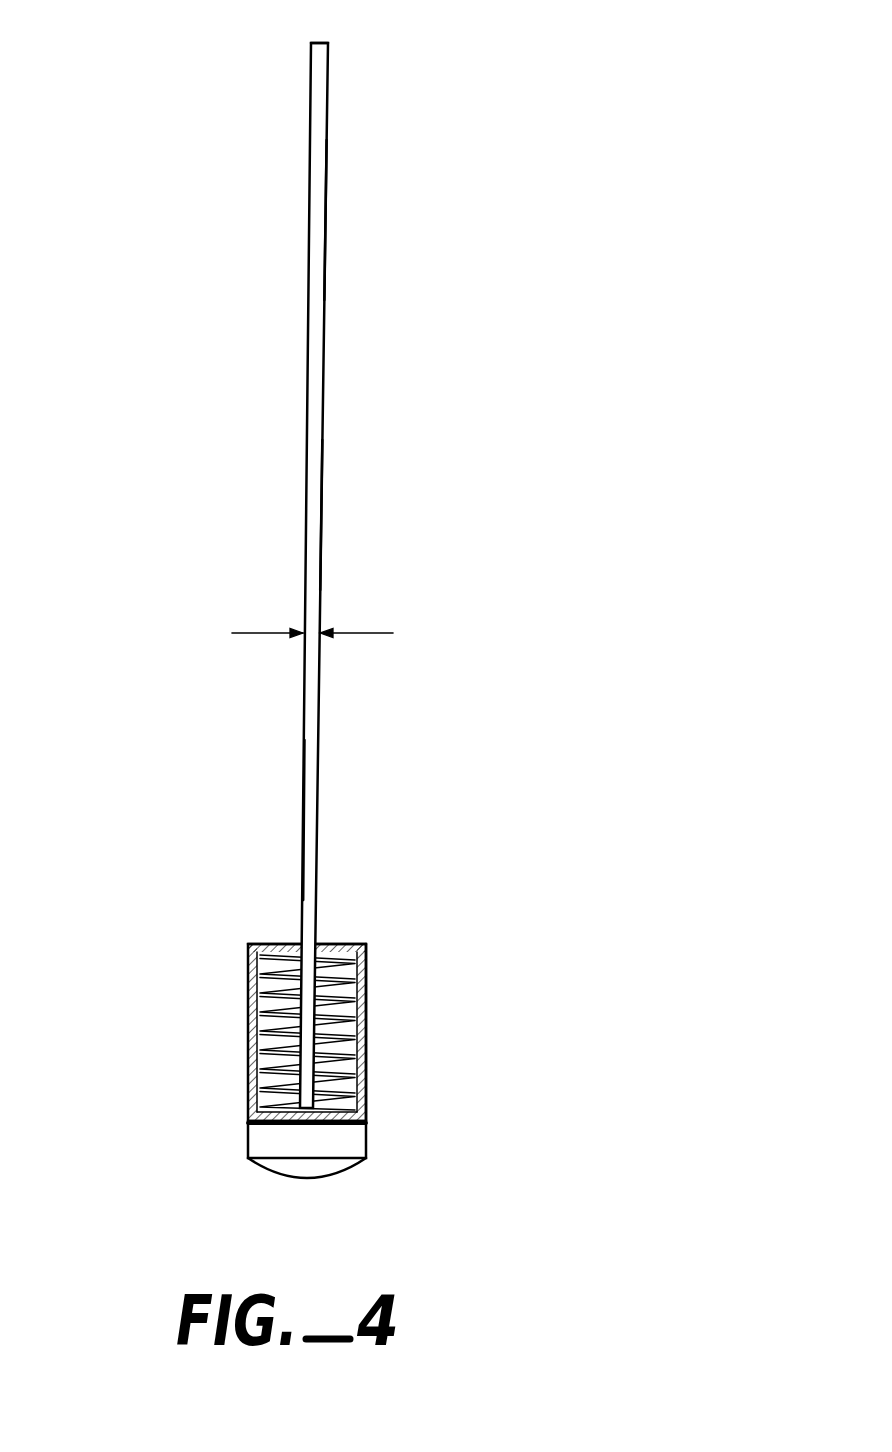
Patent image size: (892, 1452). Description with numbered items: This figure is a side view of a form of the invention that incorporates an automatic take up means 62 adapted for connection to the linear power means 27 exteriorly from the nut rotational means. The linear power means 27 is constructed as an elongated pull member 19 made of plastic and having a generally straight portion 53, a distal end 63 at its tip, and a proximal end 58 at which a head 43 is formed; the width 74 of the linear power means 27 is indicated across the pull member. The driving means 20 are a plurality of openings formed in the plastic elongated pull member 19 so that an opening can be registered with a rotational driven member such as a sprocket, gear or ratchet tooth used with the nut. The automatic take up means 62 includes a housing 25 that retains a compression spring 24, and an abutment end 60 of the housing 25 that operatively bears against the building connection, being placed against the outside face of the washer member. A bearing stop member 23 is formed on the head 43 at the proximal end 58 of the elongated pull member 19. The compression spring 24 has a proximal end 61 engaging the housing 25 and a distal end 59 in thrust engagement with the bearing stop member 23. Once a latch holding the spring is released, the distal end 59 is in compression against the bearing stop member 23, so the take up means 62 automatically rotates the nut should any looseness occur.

The elongated pull member 19 is at (325, 266).
The driving means 20 is at (325, 395).
The bearing stop member 23 is at (248, 1127).
The compression spring 24 is at (372, 1010).
The housing 25 is at (376, 1070).
The linear power means 27 is at (365, 540).
The head 43 is at (368, 1142).
The generally straight portion 53 is at (302, 808).
The proximal end 58 is at (335, 1102).
The distal end of compression spring 59 is at (257, 1110).
The abutment end 60 is at (340, 943).
The proximal end of compression spring 61 is at (258, 966).
The automatic take up means 62 is at (468, 958).
The distal end 63 is at (318, 43).
The width 74 is at (370, 633).